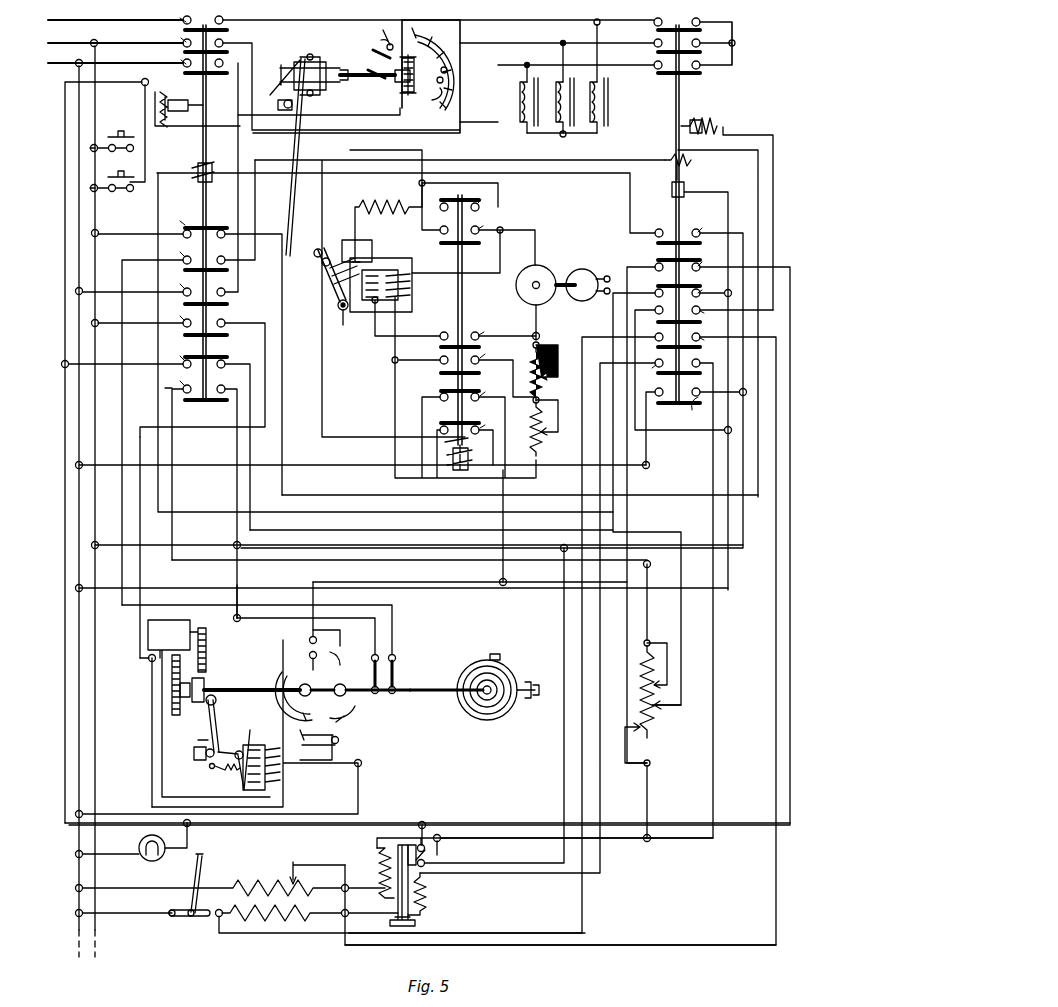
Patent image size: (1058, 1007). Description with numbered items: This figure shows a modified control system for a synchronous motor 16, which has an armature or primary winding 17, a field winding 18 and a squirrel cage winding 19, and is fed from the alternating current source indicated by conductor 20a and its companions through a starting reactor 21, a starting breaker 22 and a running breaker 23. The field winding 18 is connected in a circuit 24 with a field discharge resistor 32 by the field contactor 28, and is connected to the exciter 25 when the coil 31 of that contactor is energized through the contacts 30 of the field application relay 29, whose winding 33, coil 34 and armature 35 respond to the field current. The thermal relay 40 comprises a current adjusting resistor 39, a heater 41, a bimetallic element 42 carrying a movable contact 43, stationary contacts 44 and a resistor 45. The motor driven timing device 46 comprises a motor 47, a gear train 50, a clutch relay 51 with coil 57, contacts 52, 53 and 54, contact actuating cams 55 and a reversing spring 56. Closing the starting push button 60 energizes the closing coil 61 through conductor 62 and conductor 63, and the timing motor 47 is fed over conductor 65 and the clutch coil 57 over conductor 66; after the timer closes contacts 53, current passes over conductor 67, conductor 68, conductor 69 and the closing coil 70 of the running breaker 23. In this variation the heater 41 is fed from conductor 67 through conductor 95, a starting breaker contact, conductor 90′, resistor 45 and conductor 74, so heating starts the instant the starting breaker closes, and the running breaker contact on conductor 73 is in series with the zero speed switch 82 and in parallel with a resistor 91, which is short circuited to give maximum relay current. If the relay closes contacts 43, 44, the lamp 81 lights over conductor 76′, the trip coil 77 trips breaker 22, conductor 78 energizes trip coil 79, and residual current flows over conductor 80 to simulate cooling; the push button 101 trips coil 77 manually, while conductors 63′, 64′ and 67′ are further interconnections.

The supply conductor 20a is at (132, 19).
The synchronous motor 16 is at (371, 54).
The armature or primary winding 17 is at (383, 32).
The field or secondary winding 18 is at (420, 82).
The squirrel cage winding 19 is at (441, 45).
The starting reactor 21 is at (564, 89).
The starting breaker 22 is at (197, 209).
The running breaker 23 is at (677, 223).
The field circuit 24 is at (380, 200).
The exciter 25 is at (546, 267).
The field contactor or breaker 28 is at (467, 313).
The field application relay 29 is at (342, 322).
The contacts 30 is at (318, 268).
The coil 31 is at (467, 460).
The field discharge resistor 32 is at (384, 214).
The winding 33 is at (357, 249).
The coil 34 is at (414, 284).
The armature 35 is at (332, 258).
The current adjusting resistor 39 is at (266, 882).
The thermal relay 40 is at (512, 812).
The heater 41 is at (375, 858).
The bimetallic element 42 is at (394, 902).
The movable contact 43 is at (408, 848).
The stationary contacts 44 is at (426, 860).
The resistor 45 is at (656, 728).
The motor driven transfer or timing device 46 is at (209, 647).
The motor 47 is at (205, 713).
The gear train 50 is at (206, 664).
The electromagnetic relay or clutch 51 is at (226, 742).
The contacts 52 is at (319, 745).
The contacts 53 is at (368, 704).
The contacts 54 is at (360, 655).
The cams or contact actuating means 55 is at (280, 675).
The timing device reversing spring 56 is at (496, 716).
The coil 57 is at (278, 770).
The starting push button switch 60 is at (113, 133).
The closing coil 61 is at (196, 170).
The conductor 62 is at (160, 220).
The conductor 63 is at (424, 892).
The conductor 63′ is at (516, 593).
The conductor 64′ is at (222, 430).
The conductor 65 is at (164, 770).
The conductor 66 is at (150, 732).
The conductor 67 is at (194, 545).
The conductor 67′ is at (292, 622).
The conductor 68 is at (158, 596).
The conductor 69 is at (258, 212).
The closing coil 70 is at (678, 172).
The conductor 73 is at (556, 462).
The conductor 74 is at (630, 838).
The conductor 76′ is at (320, 824).
The trip coil 77 is at (158, 106).
The conductor 78 is at (283, 400).
The trip coil 79 is at (726, 122).
The conductor 80 is at (681, 670).
The indicating lamp 81 is at (140, 842).
The zero speed switch 82 is at (188, 920).
The conductor 90′ is at (298, 563).
The resistor 91 is at (258, 930).
The conductor 95 is at (236, 480).
The push button 101 is at (113, 174).